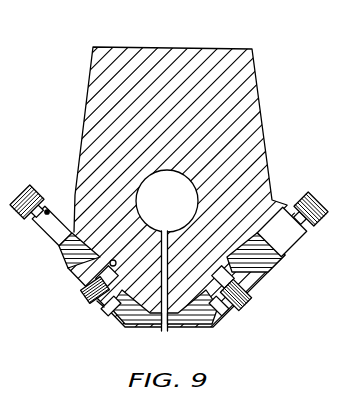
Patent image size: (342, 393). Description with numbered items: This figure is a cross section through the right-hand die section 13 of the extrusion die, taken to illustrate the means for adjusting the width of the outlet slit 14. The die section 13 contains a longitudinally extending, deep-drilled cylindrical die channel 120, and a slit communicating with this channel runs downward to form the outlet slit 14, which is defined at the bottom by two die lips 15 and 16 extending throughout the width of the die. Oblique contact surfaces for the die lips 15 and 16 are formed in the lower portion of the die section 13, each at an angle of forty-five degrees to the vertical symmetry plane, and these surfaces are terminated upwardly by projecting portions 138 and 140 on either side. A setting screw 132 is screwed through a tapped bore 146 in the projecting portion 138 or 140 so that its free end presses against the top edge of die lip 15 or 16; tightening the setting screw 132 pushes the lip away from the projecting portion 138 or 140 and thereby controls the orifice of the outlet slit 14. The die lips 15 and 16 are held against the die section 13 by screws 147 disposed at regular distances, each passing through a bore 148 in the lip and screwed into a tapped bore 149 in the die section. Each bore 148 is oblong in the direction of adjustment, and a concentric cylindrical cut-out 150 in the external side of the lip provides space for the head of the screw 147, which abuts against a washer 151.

The die section 13 is at (253, 49).
The die channel 120 is at (196, 189).
The outlet slit 14 is at (166, 329).
The die lip 15 is at (214, 326).
The die lip 16 is at (123, 328).
The setting screw 132 is at (17, 198).
The tapped bore 146 is at (48, 210).
The projecting portion 140 is at (39, 241).
The tapped bore 149 is at (110, 263).
The cylindrical cut-out 150 is at (82, 284).
The washer 151 is at (96, 279).
The screw 147 is at (97, 301).
The bore 148 is at (106, 312).
The projecting portion 138 is at (307, 226).